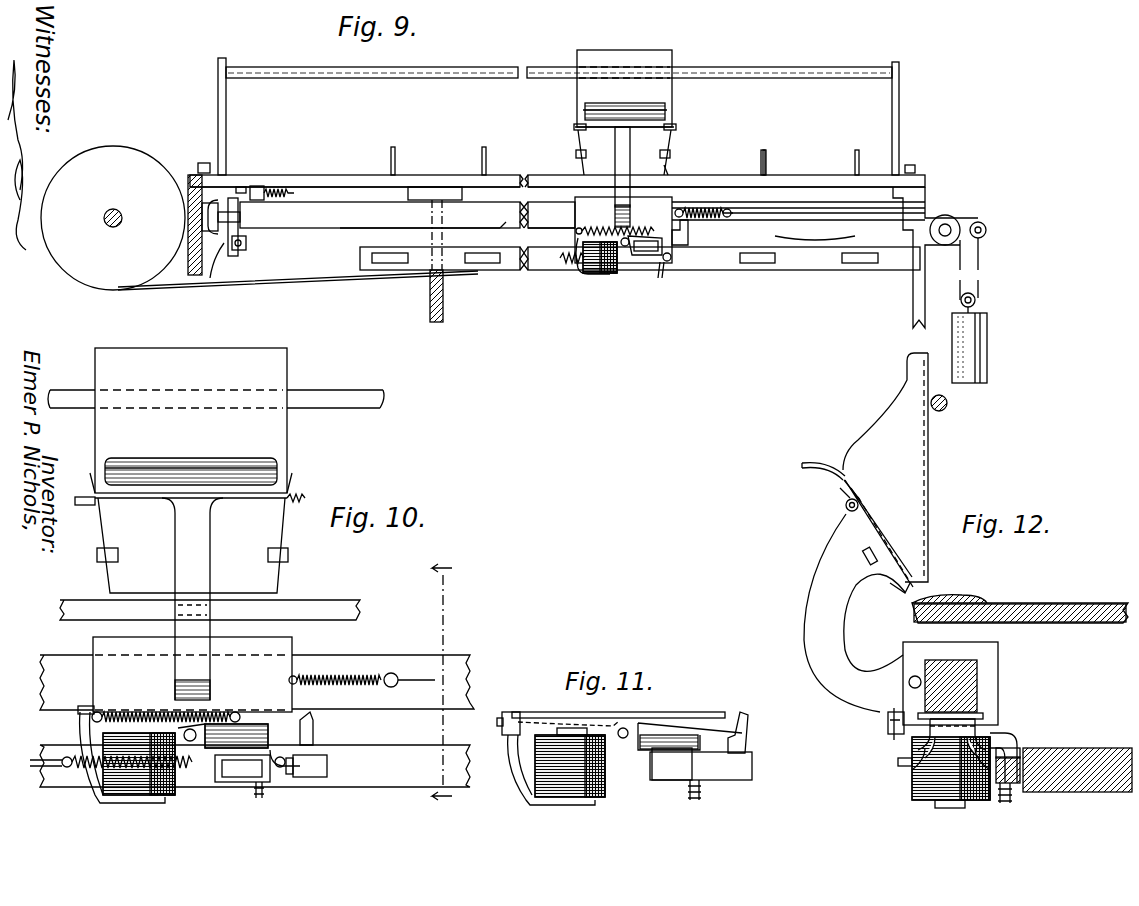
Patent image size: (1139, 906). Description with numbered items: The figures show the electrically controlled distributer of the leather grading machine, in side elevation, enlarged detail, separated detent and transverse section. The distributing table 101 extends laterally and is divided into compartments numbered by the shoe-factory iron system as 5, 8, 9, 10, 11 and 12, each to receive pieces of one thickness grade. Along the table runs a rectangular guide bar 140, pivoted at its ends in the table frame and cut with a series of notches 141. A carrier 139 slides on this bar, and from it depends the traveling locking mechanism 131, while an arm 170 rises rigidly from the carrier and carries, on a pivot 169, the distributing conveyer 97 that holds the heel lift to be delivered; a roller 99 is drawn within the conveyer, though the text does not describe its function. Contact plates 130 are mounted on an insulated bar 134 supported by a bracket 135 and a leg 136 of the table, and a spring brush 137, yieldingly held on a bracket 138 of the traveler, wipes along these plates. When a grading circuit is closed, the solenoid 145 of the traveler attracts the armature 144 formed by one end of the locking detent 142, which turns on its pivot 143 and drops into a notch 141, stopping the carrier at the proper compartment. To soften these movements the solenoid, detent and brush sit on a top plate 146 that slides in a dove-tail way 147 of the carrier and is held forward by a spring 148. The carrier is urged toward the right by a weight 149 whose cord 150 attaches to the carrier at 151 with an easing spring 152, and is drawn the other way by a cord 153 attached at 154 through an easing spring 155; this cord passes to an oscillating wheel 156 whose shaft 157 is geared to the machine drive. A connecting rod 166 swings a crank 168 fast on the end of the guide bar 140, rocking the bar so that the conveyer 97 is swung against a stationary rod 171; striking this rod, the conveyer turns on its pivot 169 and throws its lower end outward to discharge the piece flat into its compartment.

In FIG. 9, the compartment 5 is at (414, 161).
In FIG. 9, the compartment 8 is at (518, 161).
In FIG. 9, the compartment 9 is at (668, 168).
In FIG. 9, the compartment 10 is at (740, 161).
In FIG. 9, the compartment 11 is at (791, 160).
In FIG. 9, the compartment 12 is at (868, 160).
In FIG. 10, the compartment 12 is at (448, 677).
In FIG. 9, the distributing conveyer 97 is at (655, 60).
In FIG. 10, the distributing conveyer 97 is at (282, 436).
In FIG. 12, the distributing conveyer 97 is at (915, 447).
In FIG. 9, the feed roller 99 is at (662, 110).
In FIG. 10, the feed roller 99 is at (172, 462).
In FIG. 12, the feed roller 99 is at (812, 470).
In FIG. 9, the distributing table 101 is at (321, 183).
In FIG. 9, the contact plate 130 is at (395, 265).
In FIG. 10, the contact plate 130 is at (330, 742).
In FIG. 12, the contact plate 130 is at (1020, 752).
In FIG. 9, the traveling locking mechanism 131 is at (611, 269).
In FIG. 10, the traveling locking mechanism 131 is at (445, 726).
In FIG. 11, the traveling locking mechanism 131 is at (588, 770).
In FIG. 12, the traveling locking mechanism 131 is at (921, 772).
In FIG. 9, the insulated bar 134 is at (732, 272).
In FIG. 12, the insulated bar 134 is at (1080, 735).
In FIG. 9, the bracket 135 is at (430, 316).
In FIG. 9, the leg 136 is at (912, 310).
In FIG. 11, the spring brush 137 is at (753, 769).
In FIG. 12, the spring brush 137 is at (1012, 790).
In FIG. 11, the bracket 138 is at (700, 793).
In FIG. 12, the bracket 138 is at (1003, 735).
In FIG. 12, the carrier 139 is at (906, 652).
In FIG. 9, the rectangular guide bar 140 is at (334, 222).
In FIG. 10, the rectangular guide bar 140 is at (472, 668).
In FIG. 12, the rectangular guide bar 140 is at (975, 668).
In FIG. 9, the notches 141 is at (496, 226).
In FIG. 10, the notches 141 is at (345, 680).
In FIG. 9, the locking detent 142 is at (688, 240).
In FIG. 10, the locking detent 142 is at (312, 718).
In FIG. 11, the locking detent 142 is at (748, 727).
In FIG. 12, the locking detent 142 is at (985, 688).
In FIG. 11, the pivot 143 is at (624, 742).
In FIG. 10, the armature 144 is at (150, 712).
In FIG. 11, the armature 144 is at (575, 712).
In FIG. 9, the solenoid 145 is at (592, 260).
In FIG. 10, the solenoid 145 is at (105, 782).
In FIG. 11, the solenoid 145 is at (512, 790).
In FIG. 12, the solenoid 145 is at (930, 780).
In FIG. 11, the top plate 146 is at (628, 712).
In FIG. 12, the dove-tail way 147 is at (920, 716).
In FIG. 10, the spring 148 is at (120, 705).
In FIG. 9, the weight 149 is at (982, 333).
In FIG. 9, the cord 150 is at (975, 250).
In FIG. 9, the connection point 151 is at (680, 212).
In FIG. 9, the spring 152 is at (720, 212).
In FIG. 9, the cord 153 is at (350, 277).
In FIG. 10, the cord 153 is at (35, 768).
In FIG. 9, the connection point 154 is at (665, 262).
In FIG. 10, the connection point 154 is at (285, 768).
In FIG. 9, the easing spring 155 is at (578, 258).
In FIG. 9, the oscillating wheel 156 is at (113, 218).
In FIG. 9, the shaft 157 is at (113, 209).
In FIG. 9, the connecting rod 166 is at (242, 250).
In FIG. 9, the crank 168 is at (205, 274).
In FIG. 10, the pivot 169 is at (305, 502).
In FIG. 12, the pivot 169 is at (846, 507).
In FIG. 9, the arm 170 is at (622, 177).
In FIG. 10, the arm 170 is at (203, 560).
In FIG. 12, the arm 170 is at (815, 596).
In FIG. 9, the stationary rod 171 is at (470, 79).
In FIG. 10, the stationary rod 171 is at (224, 416).
In FIG. 12, the stationary rod 171 is at (948, 405).